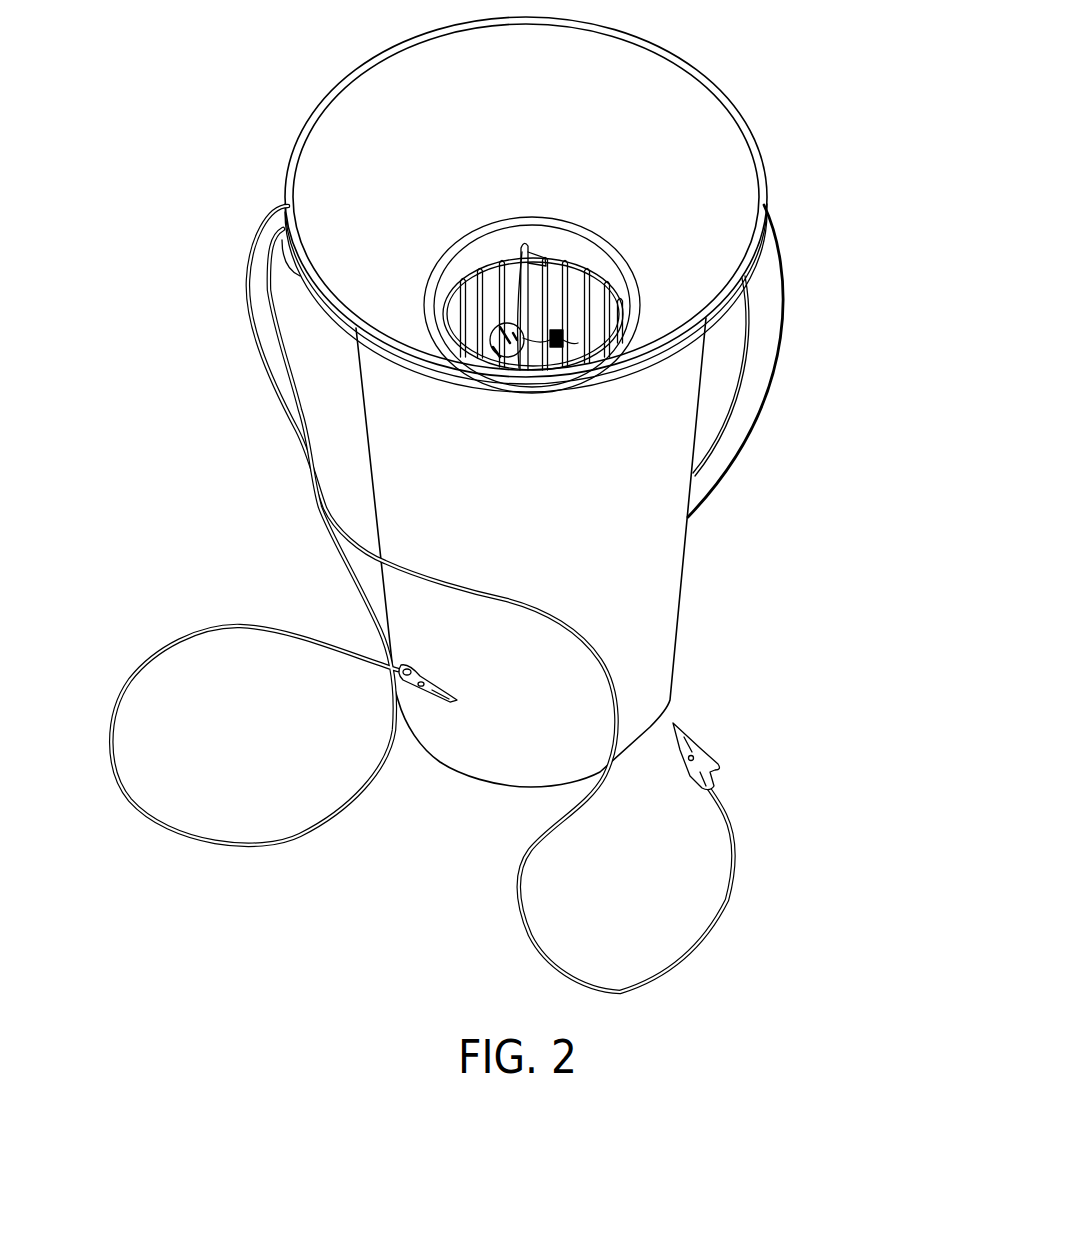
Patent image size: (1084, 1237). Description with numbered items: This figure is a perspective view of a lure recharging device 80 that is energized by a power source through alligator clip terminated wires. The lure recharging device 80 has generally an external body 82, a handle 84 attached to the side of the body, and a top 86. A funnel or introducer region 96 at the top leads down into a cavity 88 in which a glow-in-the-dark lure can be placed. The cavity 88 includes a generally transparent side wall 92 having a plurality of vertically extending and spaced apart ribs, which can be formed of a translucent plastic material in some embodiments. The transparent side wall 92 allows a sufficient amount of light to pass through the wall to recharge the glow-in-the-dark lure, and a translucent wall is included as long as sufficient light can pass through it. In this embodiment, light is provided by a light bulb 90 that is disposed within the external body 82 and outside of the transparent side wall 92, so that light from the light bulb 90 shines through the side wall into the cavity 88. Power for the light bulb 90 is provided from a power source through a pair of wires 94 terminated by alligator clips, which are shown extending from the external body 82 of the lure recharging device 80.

The lure recharging device 80 is at (493, 496).
The external body 82 is at (680, 593).
The handle 84 is at (757, 430).
The top 86 is at (680, 55).
The cavity 88 is at (546, 258).
The light bulb 90 is at (555, 345).
The transparent side wall 92 is at (515, 327).
The wires 94 is at (438, 705).
The funnel or introducer region 96 is at (383, 135).